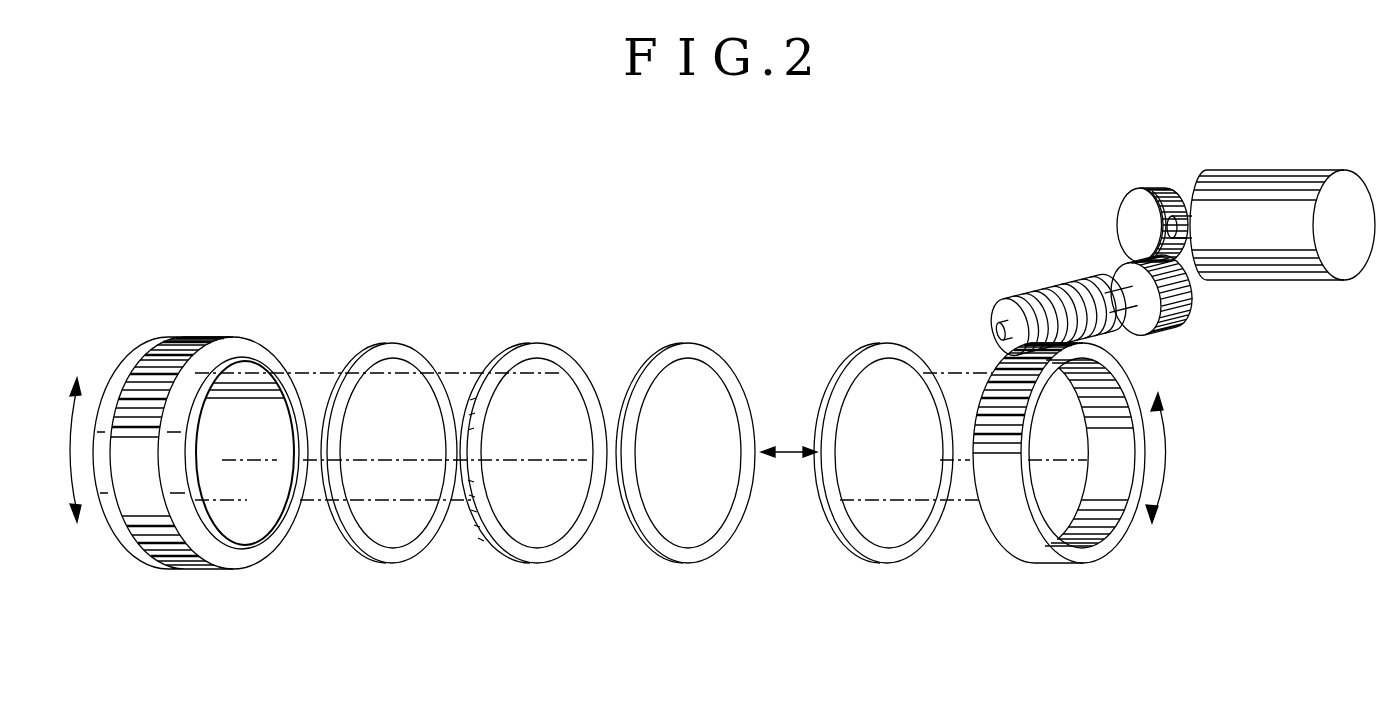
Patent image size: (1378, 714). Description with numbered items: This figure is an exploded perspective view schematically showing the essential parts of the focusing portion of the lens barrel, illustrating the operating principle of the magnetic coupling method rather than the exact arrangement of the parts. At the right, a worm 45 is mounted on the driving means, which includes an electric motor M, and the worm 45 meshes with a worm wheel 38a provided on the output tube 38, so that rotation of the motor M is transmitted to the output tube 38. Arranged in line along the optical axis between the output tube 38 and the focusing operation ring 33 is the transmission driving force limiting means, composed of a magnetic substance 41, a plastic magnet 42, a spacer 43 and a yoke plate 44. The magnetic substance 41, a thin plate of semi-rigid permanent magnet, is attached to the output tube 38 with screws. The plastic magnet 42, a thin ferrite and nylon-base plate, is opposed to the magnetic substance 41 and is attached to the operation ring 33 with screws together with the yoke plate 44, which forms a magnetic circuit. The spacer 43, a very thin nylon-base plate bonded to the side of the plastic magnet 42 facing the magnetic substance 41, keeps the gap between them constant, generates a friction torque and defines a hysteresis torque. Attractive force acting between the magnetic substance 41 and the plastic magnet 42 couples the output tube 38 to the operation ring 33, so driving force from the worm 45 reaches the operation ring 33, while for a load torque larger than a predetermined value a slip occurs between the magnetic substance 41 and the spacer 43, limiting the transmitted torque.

The focusing operation ring 33 is at (187, 338).
The yoke plate 44 is at (397, 347).
The plastic magnet 42 is at (540, 347).
The spacer 43 is at (690, 350).
The magnetic substance 41 is at (885, 348).
The output tube 38 is at (1036, 467).
The worm wheel 38a is at (1003, 386).
The worm 45 is at (1047, 287).
The motor M is at (1283, 284).